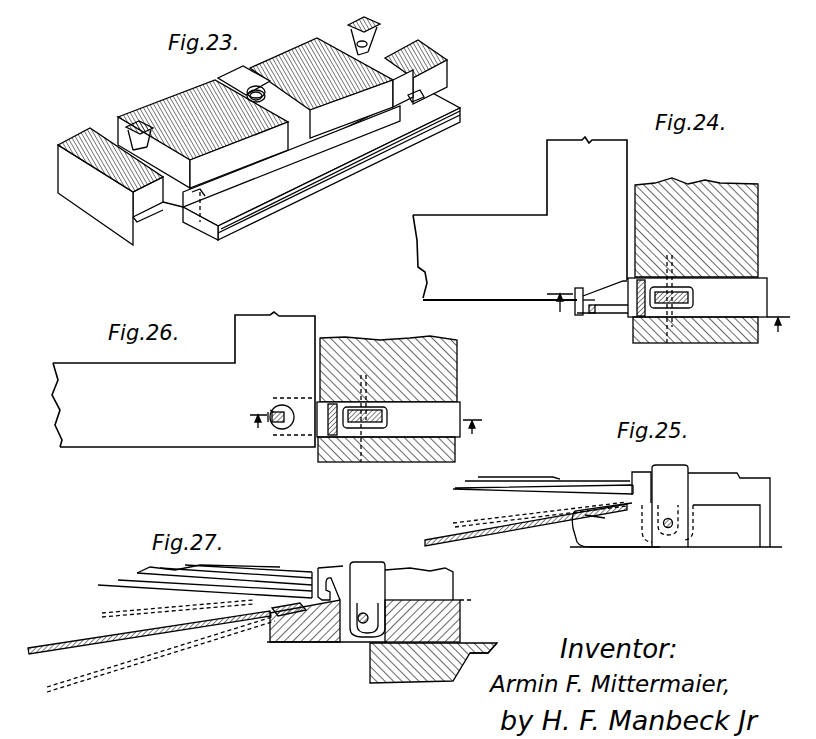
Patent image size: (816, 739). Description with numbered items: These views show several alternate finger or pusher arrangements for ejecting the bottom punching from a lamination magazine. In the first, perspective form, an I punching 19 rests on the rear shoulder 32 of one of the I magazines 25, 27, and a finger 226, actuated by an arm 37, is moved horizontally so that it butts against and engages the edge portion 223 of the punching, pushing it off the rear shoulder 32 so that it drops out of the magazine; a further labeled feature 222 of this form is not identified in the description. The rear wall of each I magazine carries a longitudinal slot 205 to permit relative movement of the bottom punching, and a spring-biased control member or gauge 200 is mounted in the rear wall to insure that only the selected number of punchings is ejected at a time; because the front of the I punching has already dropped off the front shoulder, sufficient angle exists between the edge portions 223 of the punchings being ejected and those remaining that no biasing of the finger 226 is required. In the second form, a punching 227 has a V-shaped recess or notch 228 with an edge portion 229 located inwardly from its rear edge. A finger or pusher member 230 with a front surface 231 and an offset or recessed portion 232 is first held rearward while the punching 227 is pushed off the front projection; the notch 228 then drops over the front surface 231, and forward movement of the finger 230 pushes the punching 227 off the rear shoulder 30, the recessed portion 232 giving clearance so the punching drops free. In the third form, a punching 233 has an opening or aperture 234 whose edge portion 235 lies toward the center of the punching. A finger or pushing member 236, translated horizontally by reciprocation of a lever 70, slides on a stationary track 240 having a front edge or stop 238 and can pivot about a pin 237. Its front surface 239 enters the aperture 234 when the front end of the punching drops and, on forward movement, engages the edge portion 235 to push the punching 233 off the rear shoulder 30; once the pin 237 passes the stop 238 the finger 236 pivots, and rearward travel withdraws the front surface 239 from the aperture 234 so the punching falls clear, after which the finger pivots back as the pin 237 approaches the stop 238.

In FIG. 23, the I punching 19 is at (258, 219).
In FIG. 24, the I magazine 25 is at (668, 325).
In FIG. 26, the I magazine 27 is at (364, 434).
In FIG. 24, the rear shoulder 30 is at (630, 335).
In FIG. 25, the rear shoulder 30 is at (635, 500).
In FIG. 27, the rear shoulder 30 is at (335, 567).
In FIG. 23, the rear shoulder 32 is at (133, 219).
In FIG. 23, the arm 37 is at (372, 42).
In FIG. 24, the lever 70 is at (684, 307).
In FIG. 26, the lever 70 is at (378, 423).
In FIG. 25, the lever 70 is at (684, 474).
In FIG. 27, the lever 70 is at (365, 564).
In FIG. 23, the control member or gauge 200 is at (213, 82).
In FIG. 23, the longitudinal slot 205 is at (137, 220).
In FIG. 23, the recess 222 is at (198, 197).
In FIG. 23, the edge portion 223 is at (415, 98).
In FIG. 23, the finger 226 is at (394, 104).
In FIG. 24, the punching 227 is at (511, 288).
In FIG. 25, the punching 227 is at (540, 478).
In FIG. 24, the recess or notch 228 is at (590, 293).
In FIG. 24, the edge portion 229 is at (578, 288).
In FIG. 24, the finger or pusher member 230 is at (725, 305).
In FIG. 25, the finger or pusher member 230 is at (726, 548).
In FIG. 24, the front surface 231 is at (573, 307).
In FIG. 24, the offset or recessed portion 232 is at (593, 315).
In FIG. 26, the punching 233 is at (145, 432).
In FIG. 27, the punching 233 is at (120, 587).
In FIG. 26, the opening or aperture 234 is at (279, 428).
In FIG. 27, the opening or aperture 234 is at (288, 642).
In FIG. 26, the edge portion 235 is at (268, 416).
In FIG. 26, the finger or pushing member 236 is at (434, 427).
In FIG. 27, the finger or pushing member 236 is at (418, 600).
In FIG. 24, the pin 237 is at (667, 330).
In FIG. 26, the pin 237 is at (347, 462).
In FIG. 25, the pin 237 is at (667, 528).
In FIG. 27, the pin 237 is at (362, 624).
In FIG. 27, the front edge or stop 238 is at (367, 676).
In FIG. 26, the front surface 239 is at (274, 409).
In FIG. 27, the front surface 239 is at (274, 617).
In FIG. 27, the stationary track 240 is at (477, 645).